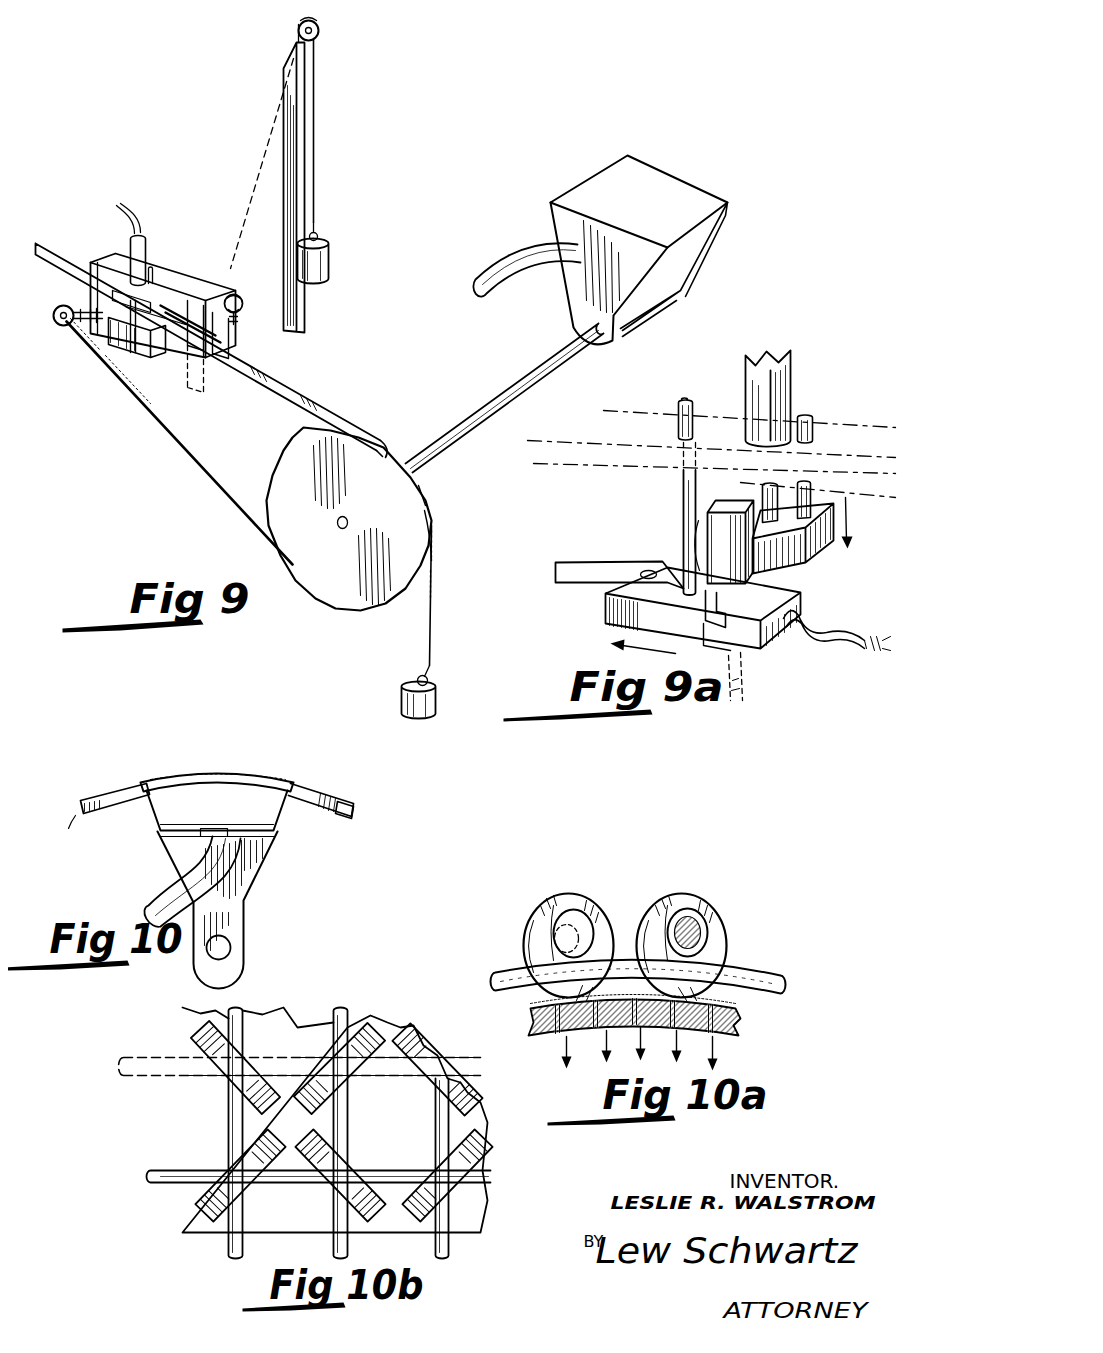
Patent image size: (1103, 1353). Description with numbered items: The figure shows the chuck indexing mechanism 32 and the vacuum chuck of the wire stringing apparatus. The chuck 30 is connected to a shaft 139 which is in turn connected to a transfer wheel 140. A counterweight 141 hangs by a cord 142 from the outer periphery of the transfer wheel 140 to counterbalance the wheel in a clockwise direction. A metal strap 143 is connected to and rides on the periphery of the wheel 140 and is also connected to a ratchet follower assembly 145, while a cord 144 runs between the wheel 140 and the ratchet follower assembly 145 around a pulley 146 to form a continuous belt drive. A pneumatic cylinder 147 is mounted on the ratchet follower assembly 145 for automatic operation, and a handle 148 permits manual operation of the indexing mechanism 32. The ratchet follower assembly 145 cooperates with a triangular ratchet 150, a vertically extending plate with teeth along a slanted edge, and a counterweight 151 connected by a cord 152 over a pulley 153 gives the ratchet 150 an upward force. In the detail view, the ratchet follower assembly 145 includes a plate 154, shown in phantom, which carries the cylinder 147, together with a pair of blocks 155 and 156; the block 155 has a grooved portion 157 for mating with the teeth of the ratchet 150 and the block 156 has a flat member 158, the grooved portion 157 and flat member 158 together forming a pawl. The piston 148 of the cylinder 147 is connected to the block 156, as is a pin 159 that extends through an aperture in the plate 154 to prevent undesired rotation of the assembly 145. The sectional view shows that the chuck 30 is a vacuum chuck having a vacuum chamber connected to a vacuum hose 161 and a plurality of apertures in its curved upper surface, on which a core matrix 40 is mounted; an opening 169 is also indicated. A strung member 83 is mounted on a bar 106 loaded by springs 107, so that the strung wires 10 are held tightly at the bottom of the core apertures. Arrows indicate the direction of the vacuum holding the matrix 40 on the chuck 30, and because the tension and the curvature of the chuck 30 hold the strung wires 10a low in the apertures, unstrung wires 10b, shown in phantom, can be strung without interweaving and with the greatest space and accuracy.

In FIG. 9, the pulley 153 is at (318, 26).
In FIG. 9, the indexing mechanism 32 is at (370, 80).
In FIG. 9, the triangular ratchet 150 is at (276, 110).
In FIG. 9A, the triangular ratchet 150 is at (711, 500).
In FIG. 9, the cord 152 is at (316, 133).
In FIG. 9, the counterweight 151 is at (331, 257).
In FIG. 9, the pneumatic cylinder 147 is at (146, 243).
In FIG. 9A, the pneumatic cylinder 147 is at (791, 371).
In FIG. 9, the handle 148 is at (254, 277).
In FIG. 9A, the handle 148 is at (755, 488).
In FIG. 9, the pulley 146 is at (57, 321).
In FIG. 9, the ratchet follower assembly 145 is at (161, 367).
In FIG. 9A, the ratchet follower assembly 145 is at (640, 507).
In FIG. 9, the metal strap 143 is at (287, 393).
In FIG. 9A, the metal strap 143 is at (620, 566).
In FIG. 9, the cord 144 is at (188, 459).
In FIG. 9A, the cord 144 is at (868, 648).
In FIG. 9, the transfer wheel 140 is at (316, 582).
In FIG. 9, the cord 142 is at (426, 620).
In FIG. 9, the counterweight 141 is at (400, 676).
In FIG. 9, the chuck 30 is at (694, 184).
In FIG. 10, the chuck 30 is at (150, 817).
In FIG. 10A, the chuck 30 is at (736, 1026).
In FIG. 9, the vacuum hose 161 is at (518, 248).
In FIG. 10, the vacuum hose 161 is at (165, 886).
In FIG. 9, the shaft 139 is at (510, 385).
In FIG. 9A, the plate 154 is at (654, 410).
In FIG. 9A, the pin 159 is at (809, 417).
In FIG. 9A, the block 156 is at (806, 548).
In FIG. 9A, the block 155 is at (800, 597).
In FIG. 9A, the flat member 158 is at (696, 568).
In FIG. 9A, the grooved portion 157 is at (743, 668).
In FIG. 10, the core matrix 40 is at (237, 756).
In FIG. 10A, the core matrix 40 is at (630, 896).
In FIG. 10B, the core matrix 40 is at (406, 1127).
In FIG. 10, the member 83 is at (98, 800).
In FIG. 10, the strung wires 10 is at (366, 818).
In FIG. 10, the bar 106 is at (349, 819).
In FIG. 10, the springs 107 is at (334, 802).
In FIG. 10, the hole 169 is at (229, 943).
In FIG. 10A, the strung wires 10a is at (768, 970).
In FIG. 10B, the strung wires 10a is at (340, 1010).
In FIG. 10A, the unstrung wire 10b is at (550, 928).
In FIG. 10B, the unstrung wire 10b is at (160, 1077).